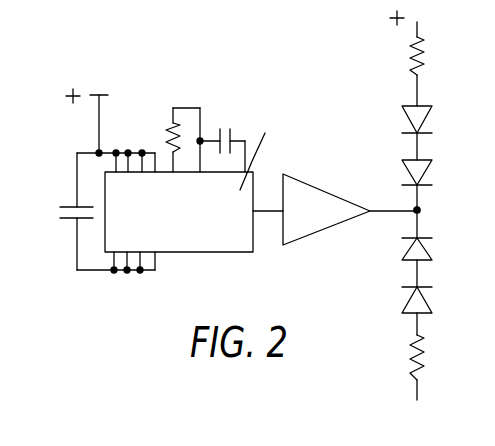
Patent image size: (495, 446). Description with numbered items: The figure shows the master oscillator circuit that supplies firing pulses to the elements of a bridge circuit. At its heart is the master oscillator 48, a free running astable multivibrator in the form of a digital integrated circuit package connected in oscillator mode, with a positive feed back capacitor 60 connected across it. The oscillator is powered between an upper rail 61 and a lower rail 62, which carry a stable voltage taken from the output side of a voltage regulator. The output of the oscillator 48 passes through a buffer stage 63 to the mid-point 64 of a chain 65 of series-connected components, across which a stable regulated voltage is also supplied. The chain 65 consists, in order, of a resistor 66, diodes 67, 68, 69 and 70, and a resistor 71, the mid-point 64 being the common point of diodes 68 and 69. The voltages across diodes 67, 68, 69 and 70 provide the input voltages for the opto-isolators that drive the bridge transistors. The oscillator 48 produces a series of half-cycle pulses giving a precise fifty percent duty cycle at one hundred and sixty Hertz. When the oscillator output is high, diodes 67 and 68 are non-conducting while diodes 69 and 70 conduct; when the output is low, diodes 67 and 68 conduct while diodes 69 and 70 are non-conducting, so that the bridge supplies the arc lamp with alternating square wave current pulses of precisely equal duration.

The master oscillator 48 is at (181, 225).
The positive feed back capacitor 60 is at (65, 219).
The rail 61 is at (106, 94).
The rail 62 is at (96, 272).
The buffer stage 63 is at (332, 193).
The mid-point 64 is at (419, 212).
The chain 65 is at (432, 204).
The resistor 66 is at (425, 58).
The diode 67 is at (427, 107).
The diode 68 is at (428, 162).
The diode 69 is at (429, 258).
The diode 70 is at (426, 299).
The resistor 71 is at (418, 367).